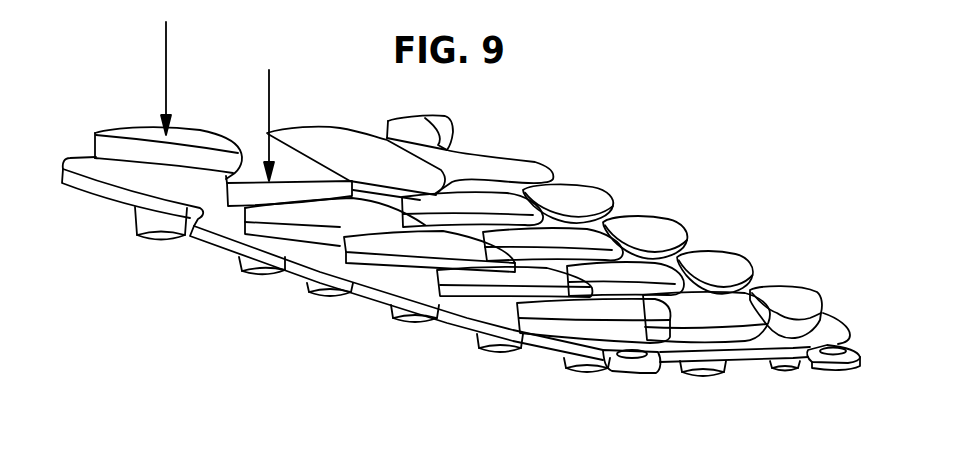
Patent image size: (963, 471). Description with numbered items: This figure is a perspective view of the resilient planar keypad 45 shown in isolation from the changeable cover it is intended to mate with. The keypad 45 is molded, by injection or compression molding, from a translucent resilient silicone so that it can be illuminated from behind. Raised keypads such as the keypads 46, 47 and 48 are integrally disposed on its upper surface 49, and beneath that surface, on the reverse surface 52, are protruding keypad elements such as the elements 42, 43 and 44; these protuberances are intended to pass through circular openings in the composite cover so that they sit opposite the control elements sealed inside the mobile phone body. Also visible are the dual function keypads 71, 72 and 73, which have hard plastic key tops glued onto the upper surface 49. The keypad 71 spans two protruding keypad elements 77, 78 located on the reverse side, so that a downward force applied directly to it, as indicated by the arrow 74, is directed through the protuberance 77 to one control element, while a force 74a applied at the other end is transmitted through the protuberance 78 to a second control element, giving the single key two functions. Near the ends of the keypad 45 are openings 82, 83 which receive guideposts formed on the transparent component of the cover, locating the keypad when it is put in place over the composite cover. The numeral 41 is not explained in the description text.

The key 41 is at (545, 312).
The protruding keypad element 42 is at (777, 372).
The protruding keypad element 43 is at (572, 374).
The protruding keypad element 44 is at (408, 322).
The resilient planar keypad 45 is at (700, 196).
The raised keypad 46 is at (790, 302).
The raised keypad 47 is at (710, 312).
The raised keypad 48 is at (348, 248).
The upper surface 49 is at (390, 280).
The reverse surface 52 is at (450, 313).
The dual function keypad 71 is at (223, 143).
The dual function keypad 72 is at (340, 150).
The dual function keypad 73 is at (425, 122).
The arrow 74 is at (165, 85).
The force 74a is at (268, 107).
The protruding keypad element 77 is at (170, 245).
The protruding keypad element 78 is at (258, 273).
The opening 82 is at (635, 374).
The opening 83 is at (838, 368).